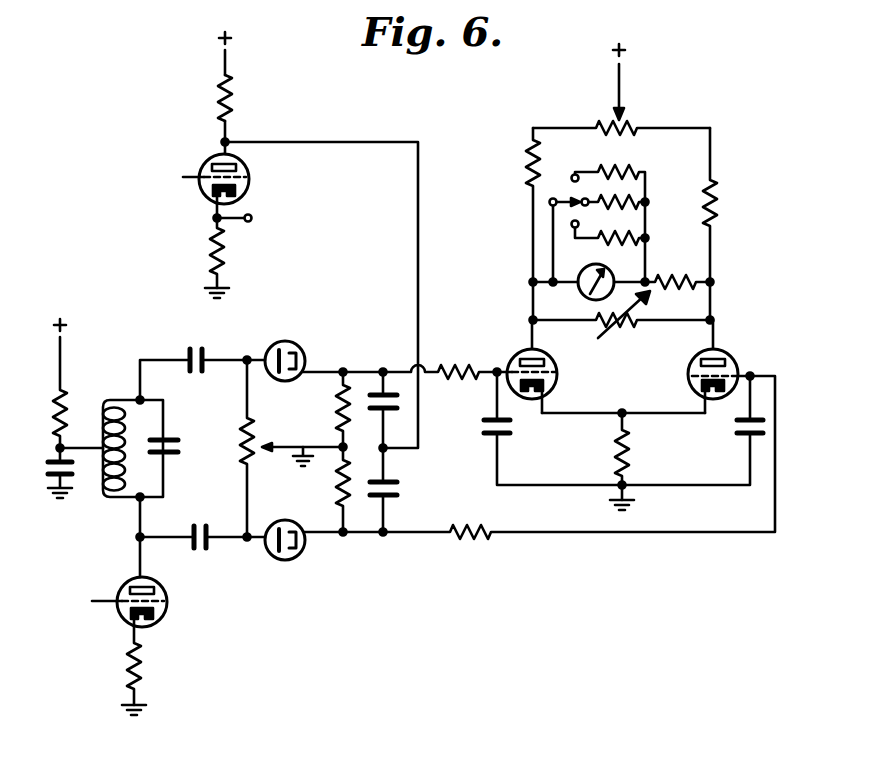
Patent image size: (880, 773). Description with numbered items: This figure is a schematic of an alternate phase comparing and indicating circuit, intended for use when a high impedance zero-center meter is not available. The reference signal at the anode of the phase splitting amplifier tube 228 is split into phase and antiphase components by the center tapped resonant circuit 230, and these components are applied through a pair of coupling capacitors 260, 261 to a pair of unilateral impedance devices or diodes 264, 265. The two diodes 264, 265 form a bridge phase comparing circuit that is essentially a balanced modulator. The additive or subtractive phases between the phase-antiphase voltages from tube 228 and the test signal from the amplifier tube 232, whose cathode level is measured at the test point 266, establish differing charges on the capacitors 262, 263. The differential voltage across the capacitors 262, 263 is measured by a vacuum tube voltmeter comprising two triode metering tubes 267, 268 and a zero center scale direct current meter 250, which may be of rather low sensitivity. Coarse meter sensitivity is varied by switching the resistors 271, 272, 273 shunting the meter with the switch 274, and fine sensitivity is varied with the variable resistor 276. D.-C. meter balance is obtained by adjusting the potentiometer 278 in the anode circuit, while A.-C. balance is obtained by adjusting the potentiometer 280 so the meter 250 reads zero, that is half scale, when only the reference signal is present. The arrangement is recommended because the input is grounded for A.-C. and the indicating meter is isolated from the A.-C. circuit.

The amplifier tube 232 is at (250, 177).
The test point 266 is at (252, 221).
The potentiometer 278 is at (630, 120).
The switch 274 is at (553, 198).
The resistor 271 is at (633, 172).
The resistor 272 is at (633, 199).
The resistor 273 is at (624, 246).
The zero center scale direct current meter 250 is at (578, 274).
The variable resistor 276 is at (620, 328).
The triode metering tube 267 is at (520, 357).
The triode metering tube 268 is at (745, 353).
The coupling capacitor 260 is at (197, 348).
The diode 264 is at (318, 331).
The center tapped resonant circuit 230 is at (155, 425).
The capacitor 262 is at (398, 398).
The potentiometer 280 is at (240, 462).
The capacitor 263 is at (398, 488).
The amplifier tube 228 is at (121, 591).
The coupling capacitor 261 is at (201, 550).
The diode 265 is at (284, 559).